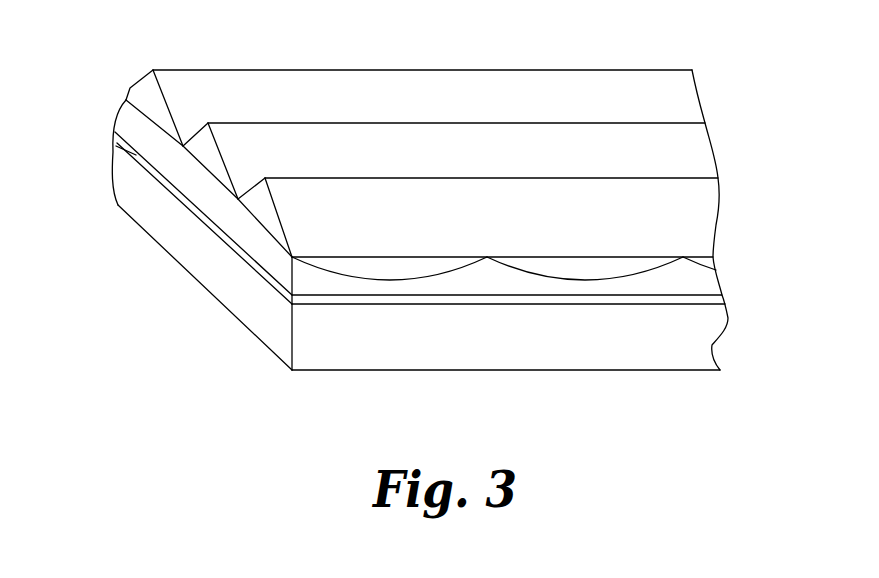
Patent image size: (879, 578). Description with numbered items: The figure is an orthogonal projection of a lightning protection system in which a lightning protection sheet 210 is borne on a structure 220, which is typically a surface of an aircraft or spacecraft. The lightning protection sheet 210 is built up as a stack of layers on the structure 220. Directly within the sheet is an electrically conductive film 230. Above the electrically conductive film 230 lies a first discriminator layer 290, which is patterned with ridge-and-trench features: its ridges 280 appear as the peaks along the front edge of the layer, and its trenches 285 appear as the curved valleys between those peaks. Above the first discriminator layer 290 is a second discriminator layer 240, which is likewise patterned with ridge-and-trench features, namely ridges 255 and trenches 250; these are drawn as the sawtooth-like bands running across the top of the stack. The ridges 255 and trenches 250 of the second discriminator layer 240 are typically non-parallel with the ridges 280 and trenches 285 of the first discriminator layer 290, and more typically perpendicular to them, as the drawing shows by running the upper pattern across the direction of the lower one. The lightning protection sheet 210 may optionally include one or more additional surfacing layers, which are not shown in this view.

The lightning protection sheet 210 is at (747, 218).
The structure 220 is at (245, 297).
The electrically conductive film 230 is at (135, 155).
The first discriminator layer 290 is at (127, 118).
The trenches 250 is at (238, 199).
The second discriminator layer 240 is at (150, 87).
The ridges 255 is at (335, 178).
The ridges 280 is at (487, 258).
The trenches 285 is at (397, 280).